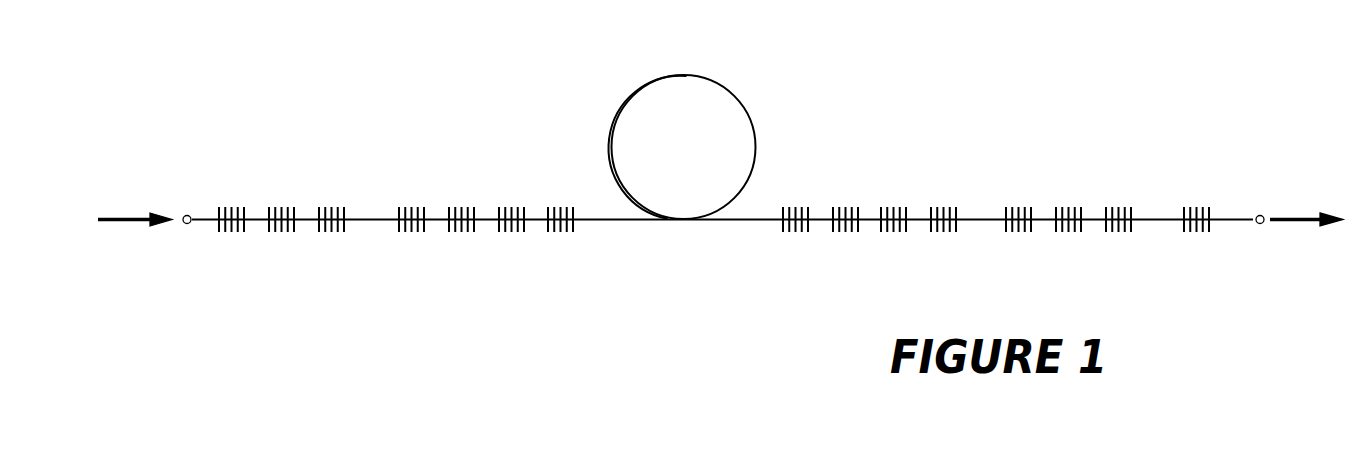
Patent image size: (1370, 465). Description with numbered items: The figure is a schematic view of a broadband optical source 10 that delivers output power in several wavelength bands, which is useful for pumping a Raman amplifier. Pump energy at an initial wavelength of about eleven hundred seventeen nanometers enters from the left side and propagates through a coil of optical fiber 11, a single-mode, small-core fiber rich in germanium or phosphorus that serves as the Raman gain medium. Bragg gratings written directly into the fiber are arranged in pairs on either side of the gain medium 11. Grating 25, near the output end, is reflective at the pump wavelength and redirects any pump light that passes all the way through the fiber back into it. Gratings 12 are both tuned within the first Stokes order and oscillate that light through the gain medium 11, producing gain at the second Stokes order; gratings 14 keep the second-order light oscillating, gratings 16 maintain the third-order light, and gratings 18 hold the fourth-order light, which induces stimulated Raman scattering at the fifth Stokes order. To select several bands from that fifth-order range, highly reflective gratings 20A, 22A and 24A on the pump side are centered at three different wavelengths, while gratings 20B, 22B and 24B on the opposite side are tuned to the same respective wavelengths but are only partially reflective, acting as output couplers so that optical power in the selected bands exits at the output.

The broadband optical source 10 is at (376, 98).
The optical fiber 11 is at (688, 73).
The gratings 12 is at (558, 204).
The gratings 14 is at (510, 204).
The gratings 16 is at (460, 204).
The gratings 18 is at (410, 204).
The highly reflective grating 20A is at (330, 204).
The partially reflective grating 20B is at (1020, 204).
The highly reflective grating 22A is at (280, 204).
The partially reflective grating 22B is at (1070, 204).
The highly reflective grating 24A is at (230, 204).
The partially reflective grating 24B is at (1120, 204).
The grating 25 is at (1198, 204).